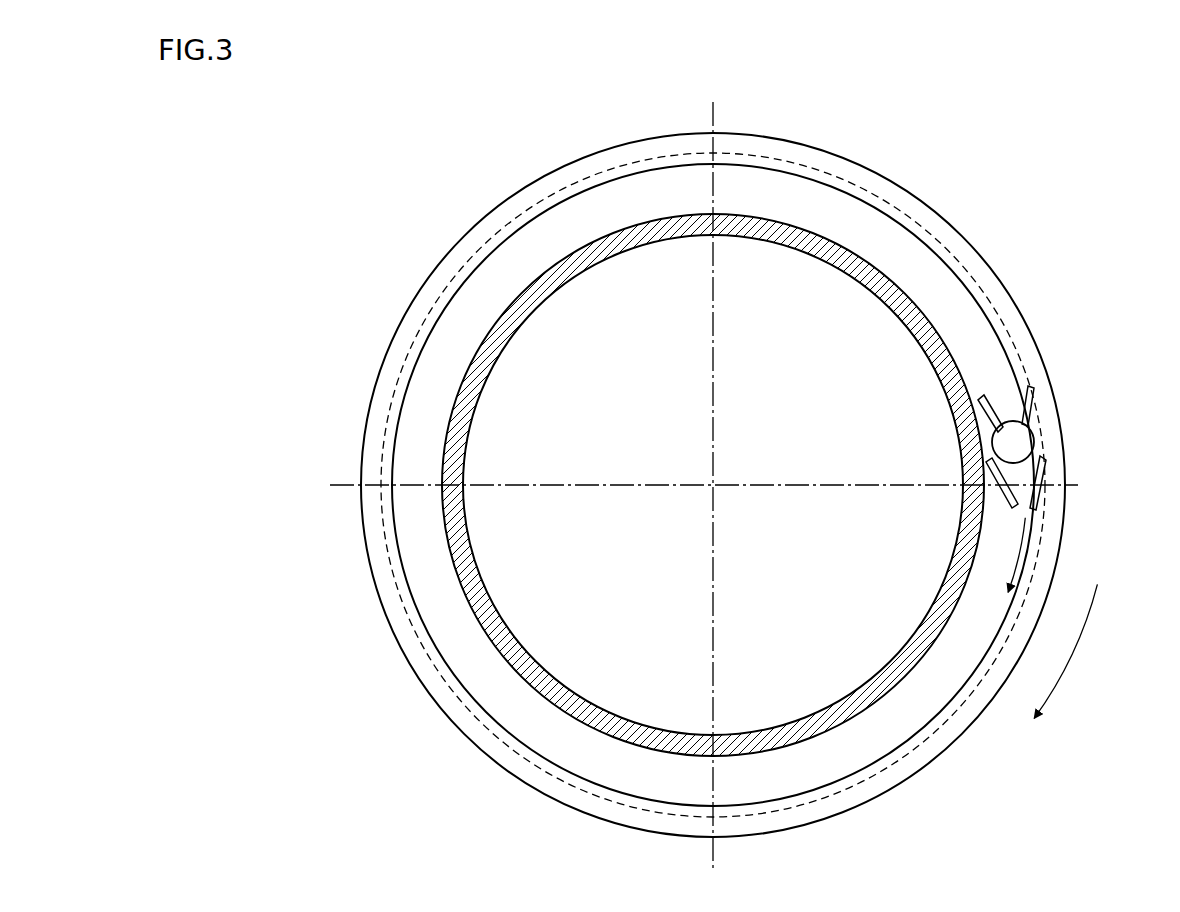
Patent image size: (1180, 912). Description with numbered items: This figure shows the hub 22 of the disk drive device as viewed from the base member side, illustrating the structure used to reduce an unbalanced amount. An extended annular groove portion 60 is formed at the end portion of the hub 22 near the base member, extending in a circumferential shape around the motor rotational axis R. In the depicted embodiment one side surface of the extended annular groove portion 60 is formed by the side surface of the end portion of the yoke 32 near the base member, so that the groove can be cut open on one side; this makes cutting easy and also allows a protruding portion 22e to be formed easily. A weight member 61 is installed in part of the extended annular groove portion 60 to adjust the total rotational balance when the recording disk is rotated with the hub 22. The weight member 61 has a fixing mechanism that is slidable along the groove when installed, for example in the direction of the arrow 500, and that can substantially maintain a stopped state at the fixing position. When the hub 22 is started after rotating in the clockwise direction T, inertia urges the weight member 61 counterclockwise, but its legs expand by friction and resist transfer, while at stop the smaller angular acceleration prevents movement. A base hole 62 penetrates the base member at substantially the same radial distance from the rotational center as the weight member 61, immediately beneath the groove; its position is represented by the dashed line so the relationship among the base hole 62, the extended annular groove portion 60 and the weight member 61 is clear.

The hub 22 is at (808, 145).
The protruding portion 22e is at (930, 240).
The yoke 32 is at (650, 225).
The extended annular groove portion 60 is at (792, 428).
The weight member 61 is at (1012, 400).
The base hole 62 is at (997, 500).
The arrow 500 is at (1022, 550).
The motor rotational axis R is at (717, 483).
The clockwise direction T is at (1065, 651).